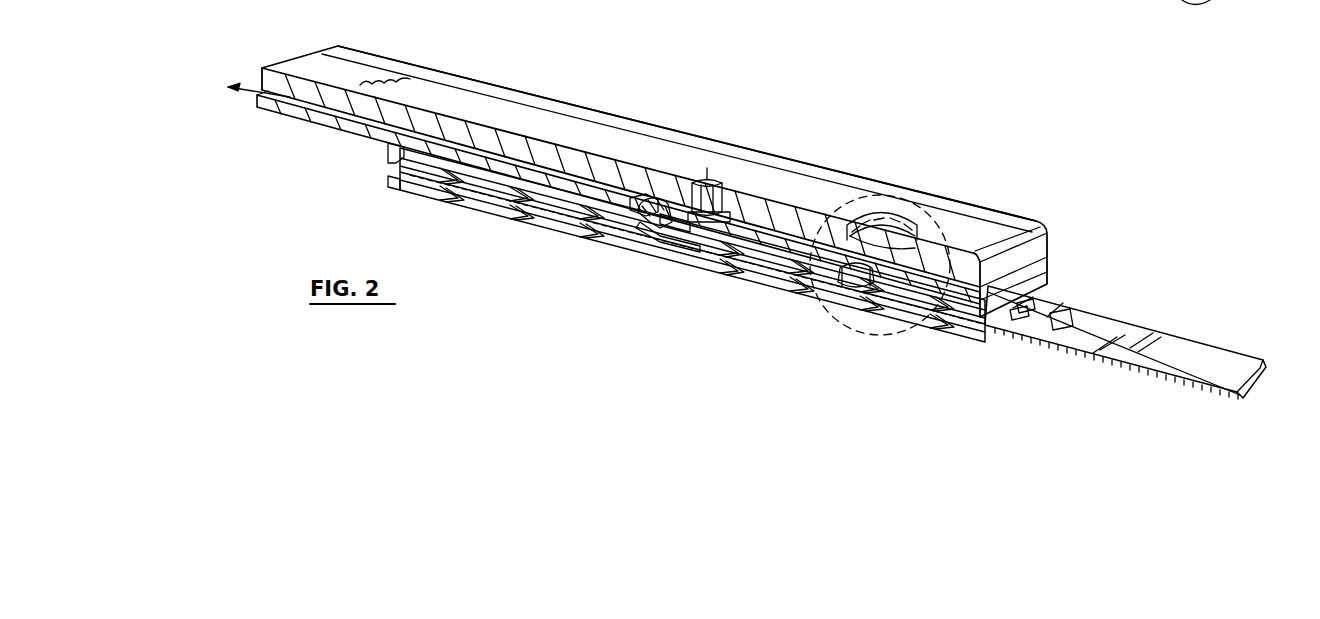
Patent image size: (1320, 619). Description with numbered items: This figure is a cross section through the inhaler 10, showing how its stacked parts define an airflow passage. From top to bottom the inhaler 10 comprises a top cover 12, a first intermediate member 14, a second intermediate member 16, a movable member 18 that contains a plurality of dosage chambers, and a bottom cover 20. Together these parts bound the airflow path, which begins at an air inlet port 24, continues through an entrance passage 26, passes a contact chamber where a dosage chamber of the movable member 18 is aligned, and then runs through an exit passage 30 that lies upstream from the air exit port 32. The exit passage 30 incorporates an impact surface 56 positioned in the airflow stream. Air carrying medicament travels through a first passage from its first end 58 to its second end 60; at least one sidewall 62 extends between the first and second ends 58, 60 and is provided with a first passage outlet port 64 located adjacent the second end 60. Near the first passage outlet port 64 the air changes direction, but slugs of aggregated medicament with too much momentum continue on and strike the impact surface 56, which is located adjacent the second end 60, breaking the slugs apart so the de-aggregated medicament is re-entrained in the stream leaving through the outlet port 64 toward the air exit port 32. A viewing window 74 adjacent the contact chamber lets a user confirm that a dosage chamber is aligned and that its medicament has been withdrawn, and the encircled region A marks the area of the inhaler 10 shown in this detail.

The inhaler 10 is at (808, 107).
The top cover 12 is at (287, 80).
The first intermediate member 14 is at (281, 110).
The second intermediate member 16 is at (387, 150).
The movable member 18 is at (1192, 347).
The bottom cover 20 is at (388, 180).
The air inlet port 24 is at (710, 212).
The entrance passage 26 is at (767, 230).
The exit passage 30 is at (560, 230).
The air exit port 32 is at (262, 88).
The impact surface 56 is at (653, 240).
The first end 58 is at (813, 292).
The second end 60 is at (637, 250).
The sidewall 62 is at (675, 215).
The first passage outlet port 64 is at (648, 203).
The viewing window 74 is at (885, 226).
The detail area A is at (937, 210).